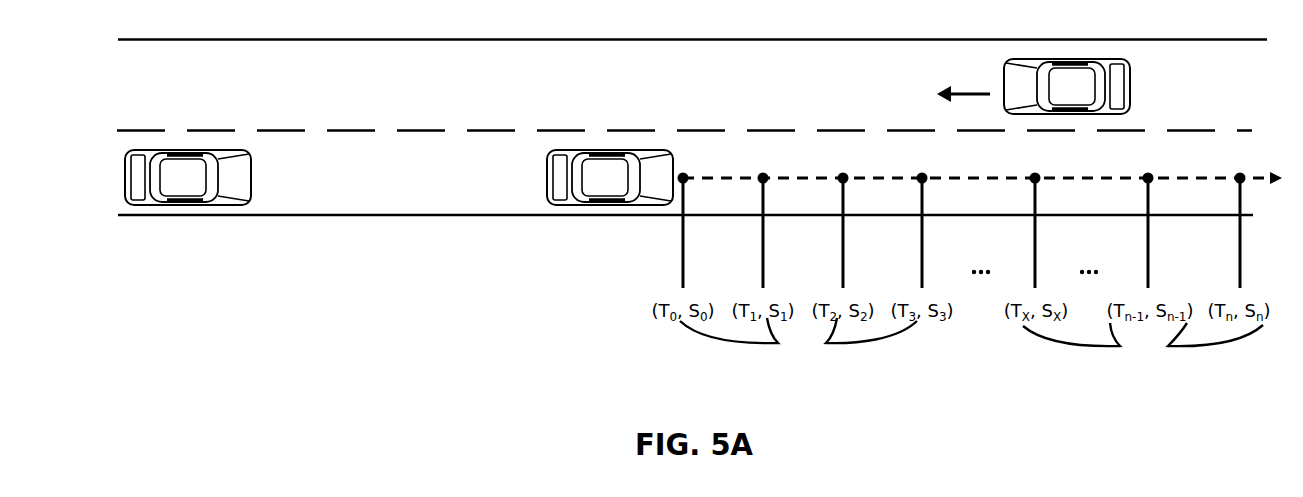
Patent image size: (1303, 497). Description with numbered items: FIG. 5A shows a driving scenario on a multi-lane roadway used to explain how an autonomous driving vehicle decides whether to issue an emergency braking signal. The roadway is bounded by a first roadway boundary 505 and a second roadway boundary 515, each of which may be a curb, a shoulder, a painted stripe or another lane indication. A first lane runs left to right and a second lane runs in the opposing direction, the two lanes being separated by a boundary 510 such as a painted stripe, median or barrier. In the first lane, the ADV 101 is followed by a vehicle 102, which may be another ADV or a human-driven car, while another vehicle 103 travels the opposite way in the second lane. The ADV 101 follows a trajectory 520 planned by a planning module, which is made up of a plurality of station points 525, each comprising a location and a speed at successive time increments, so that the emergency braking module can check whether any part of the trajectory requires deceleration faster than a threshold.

The ADV 101 is at (610, 177).
The vehicle 102 is at (188, 177).
The vehicle 103 is at (1033, 86).
The roadway boundary 505 is at (657, 214).
The boundary 510 is at (657, 130).
The roadway boundary 515 is at (661, 40).
The trajectory 520 is at (980, 166).
The station points 525 is at (971, 337).